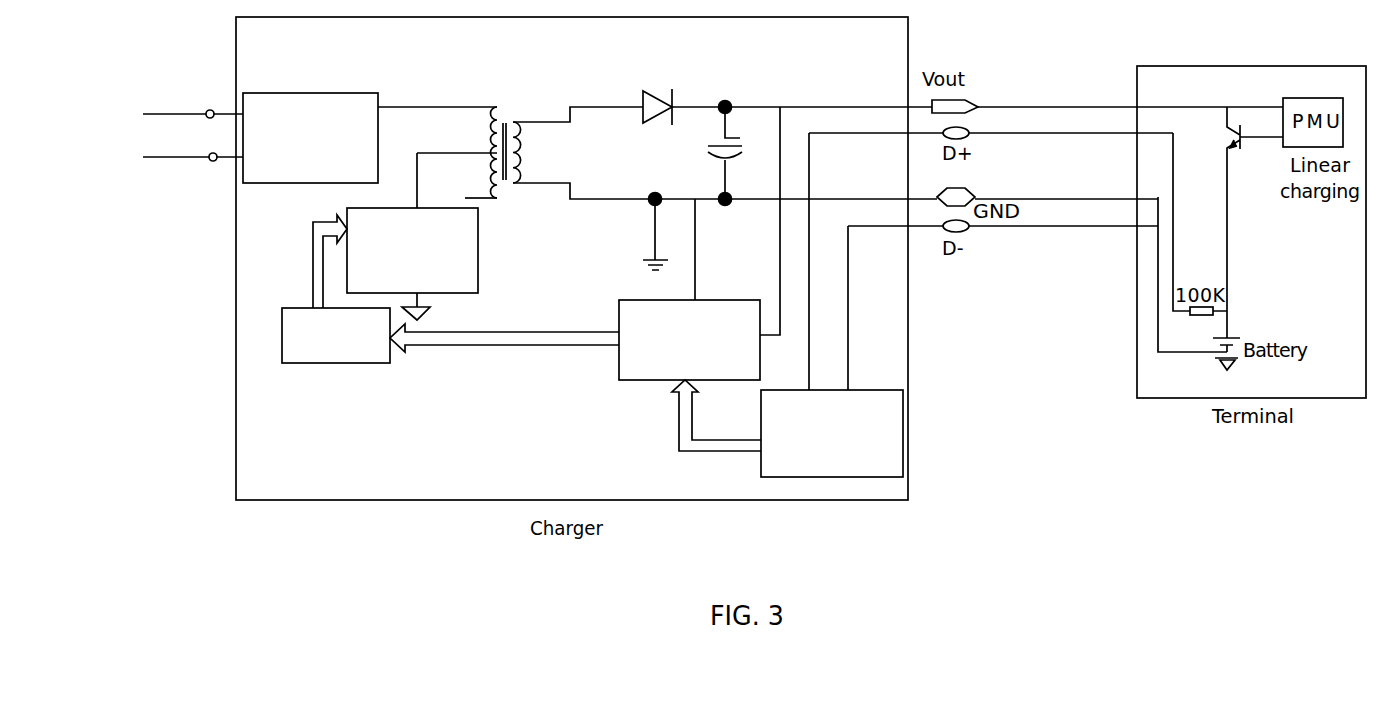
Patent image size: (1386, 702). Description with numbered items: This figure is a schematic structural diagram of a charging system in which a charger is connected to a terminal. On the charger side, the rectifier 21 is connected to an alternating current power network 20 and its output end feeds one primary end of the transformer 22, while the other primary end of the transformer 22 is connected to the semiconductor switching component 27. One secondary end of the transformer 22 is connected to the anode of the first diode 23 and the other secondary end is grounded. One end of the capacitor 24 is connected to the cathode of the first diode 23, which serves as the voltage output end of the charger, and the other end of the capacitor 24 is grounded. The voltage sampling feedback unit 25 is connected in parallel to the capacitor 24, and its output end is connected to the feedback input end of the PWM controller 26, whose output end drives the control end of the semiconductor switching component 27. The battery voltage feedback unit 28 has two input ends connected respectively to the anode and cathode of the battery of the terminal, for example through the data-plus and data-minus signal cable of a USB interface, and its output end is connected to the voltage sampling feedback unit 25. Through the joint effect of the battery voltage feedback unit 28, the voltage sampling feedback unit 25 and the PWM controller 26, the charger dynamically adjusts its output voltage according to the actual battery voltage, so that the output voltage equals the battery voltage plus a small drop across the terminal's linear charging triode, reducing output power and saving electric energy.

The AC power network 20 is at (134, 120).
The rectifier 21 is at (307, 93).
The transformer 22 is at (503, 82).
The first diode 23 is at (645, 82).
The capacitor 24 is at (745, 123).
The voltage sampling feedback unit 25 is at (715, 300).
The PWM controller 26 is at (367, 363).
The semiconductor switching component 27 is at (480, 243).
The battery voltage feedback unit 28 is at (865, 390).